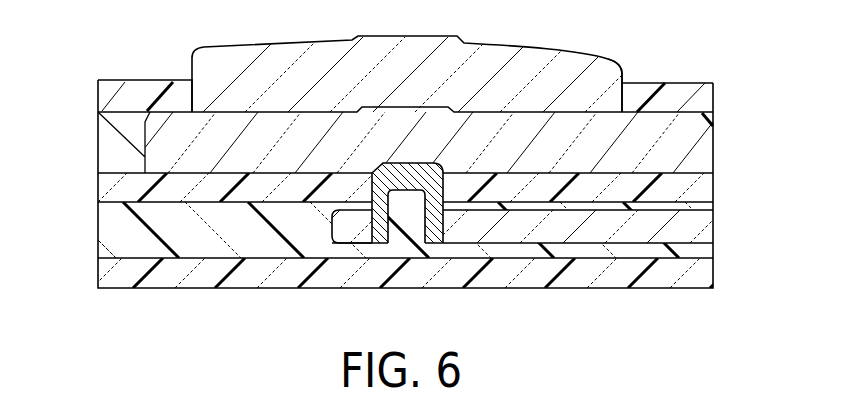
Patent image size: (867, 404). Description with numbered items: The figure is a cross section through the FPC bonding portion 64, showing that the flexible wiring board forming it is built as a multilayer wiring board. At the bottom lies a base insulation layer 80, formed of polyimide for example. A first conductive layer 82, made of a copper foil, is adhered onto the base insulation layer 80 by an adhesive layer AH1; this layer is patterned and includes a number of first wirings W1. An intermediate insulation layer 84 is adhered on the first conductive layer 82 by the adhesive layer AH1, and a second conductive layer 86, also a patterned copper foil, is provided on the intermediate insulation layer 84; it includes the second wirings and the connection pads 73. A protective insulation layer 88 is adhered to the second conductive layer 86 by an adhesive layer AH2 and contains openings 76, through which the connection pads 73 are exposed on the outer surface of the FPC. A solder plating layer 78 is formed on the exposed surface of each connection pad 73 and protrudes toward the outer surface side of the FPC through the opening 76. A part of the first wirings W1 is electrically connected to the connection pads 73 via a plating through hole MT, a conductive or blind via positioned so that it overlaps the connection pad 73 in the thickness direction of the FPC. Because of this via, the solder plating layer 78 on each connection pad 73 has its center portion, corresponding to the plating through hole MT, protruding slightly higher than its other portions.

The bonding portion 64 is at (125, 75).
The connection pad 73 is at (280, 127).
The plating through hole MT is at (383, 162).
The solder plating layer 78 is at (483, 53).
The opening 76 is at (609, 100).
The protective insulation layer 88 is at (680, 90).
The second conductive layer 86 is at (713, 148).
The intermediate insulation layer 84 is at (713, 189).
The first conductive layer 82 is at (713, 228).
The base insulation layer 80 is at (713, 269).
The adhesive layer AH2 is at (98, 143).
The adhesive layer AH1 is at (98, 227).
The first wiring W1 is at (505, 232).